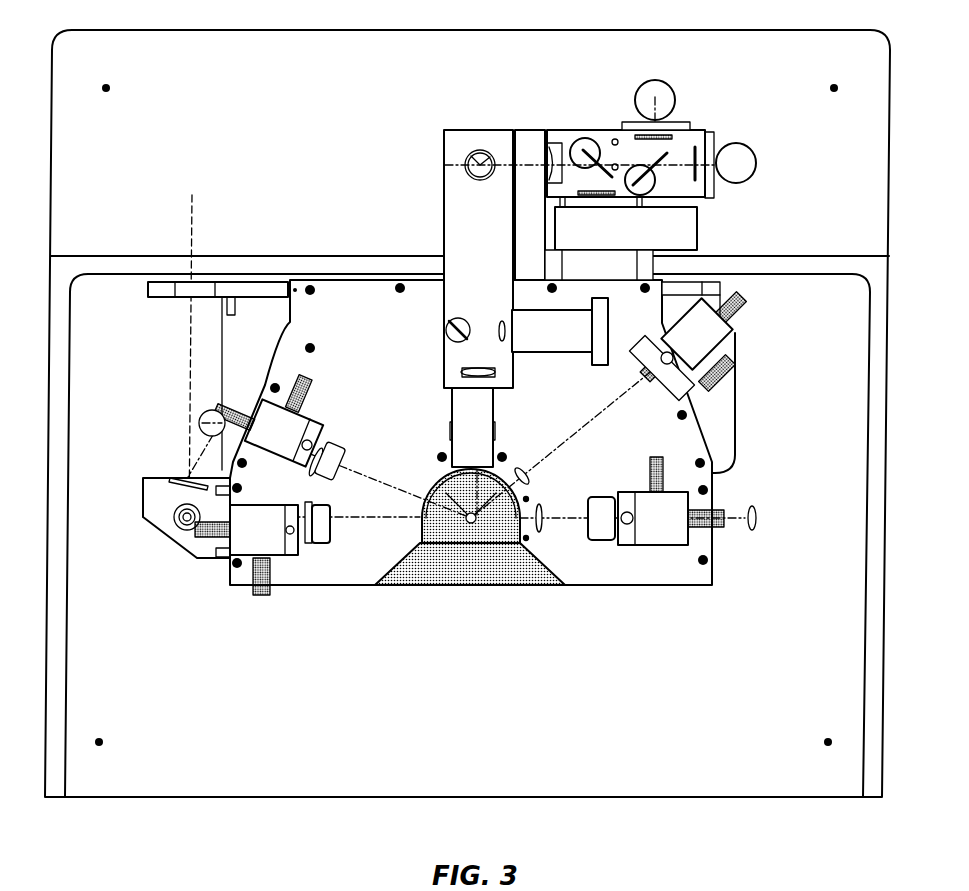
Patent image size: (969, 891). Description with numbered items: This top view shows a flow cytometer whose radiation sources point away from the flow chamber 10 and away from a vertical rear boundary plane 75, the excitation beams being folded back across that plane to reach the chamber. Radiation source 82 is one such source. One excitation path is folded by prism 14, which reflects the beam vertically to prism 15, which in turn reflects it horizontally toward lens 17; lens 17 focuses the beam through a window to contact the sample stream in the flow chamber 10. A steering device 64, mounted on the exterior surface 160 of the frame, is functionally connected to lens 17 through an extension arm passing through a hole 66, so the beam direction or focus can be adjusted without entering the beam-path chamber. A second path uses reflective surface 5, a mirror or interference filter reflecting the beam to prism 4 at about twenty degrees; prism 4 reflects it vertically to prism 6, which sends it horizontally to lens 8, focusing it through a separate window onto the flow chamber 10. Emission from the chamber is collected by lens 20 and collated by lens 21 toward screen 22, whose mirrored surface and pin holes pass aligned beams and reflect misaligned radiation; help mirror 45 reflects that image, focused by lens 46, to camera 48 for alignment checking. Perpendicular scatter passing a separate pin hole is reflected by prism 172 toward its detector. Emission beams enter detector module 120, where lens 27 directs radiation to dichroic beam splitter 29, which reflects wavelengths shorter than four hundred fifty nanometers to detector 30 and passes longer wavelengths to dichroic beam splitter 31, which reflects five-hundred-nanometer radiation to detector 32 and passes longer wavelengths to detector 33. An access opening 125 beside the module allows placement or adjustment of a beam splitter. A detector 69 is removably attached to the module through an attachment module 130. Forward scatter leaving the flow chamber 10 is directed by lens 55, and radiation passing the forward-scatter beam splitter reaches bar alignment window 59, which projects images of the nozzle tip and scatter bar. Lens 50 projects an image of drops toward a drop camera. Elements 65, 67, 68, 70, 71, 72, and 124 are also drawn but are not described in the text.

The radiation source 82 is at (470, 30).
The detector 69 is at (645, 85).
The dichroic beam splitter 29 is at (580, 142).
The attachment module 130 is at (632, 122).
The detector 32 is at (665, 130).
The detector module 120 is at (688, 143).
The detector 33 is at (714, 150).
The adjustment knob 68 is at (756, 163).
The lens 27 is at (515, 155).
The access opening 125 is at (548, 150).
The screen 22 is at (445, 150).
The dichroic beam splitter 31 is at (672, 170).
The detector 30 is at (593, 185).
The mirror mount 124 is at (638, 198).
The prism 172 is at (444, 230).
The boundary plane 75 is at (163, 288).
The exterior surface 160 is at (357, 290).
The help mirror 45 is at (452, 328).
The camera 48 is at (610, 323).
The laser module 72 is at (715, 338).
The lens 21 is at (460, 367).
The lens 46 is at (503, 342).
The prism 6 is at (208, 408).
The light source 65 is at (288, 422).
The prism 4 is at (202, 423).
The lens 8 is at (333, 448).
The lens holder 67 is at (337, 465).
The lens 20 is at (493, 420).
The reflective surface 5 is at (172, 480).
The flow chamber 10 is at (450, 483).
The lens 50 is at (542, 473).
The detector 71 is at (653, 500).
The bar alignment window 59 is at (757, 508).
The steering device 64 is at (247, 508).
The hole 66 is at (323, 510).
The prism 14 is at (175, 517).
The prism 15 is at (197, 540).
The lens 17 is at (323, 543).
The lens 55 is at (538, 535).
The lens holder 70 is at (602, 542).